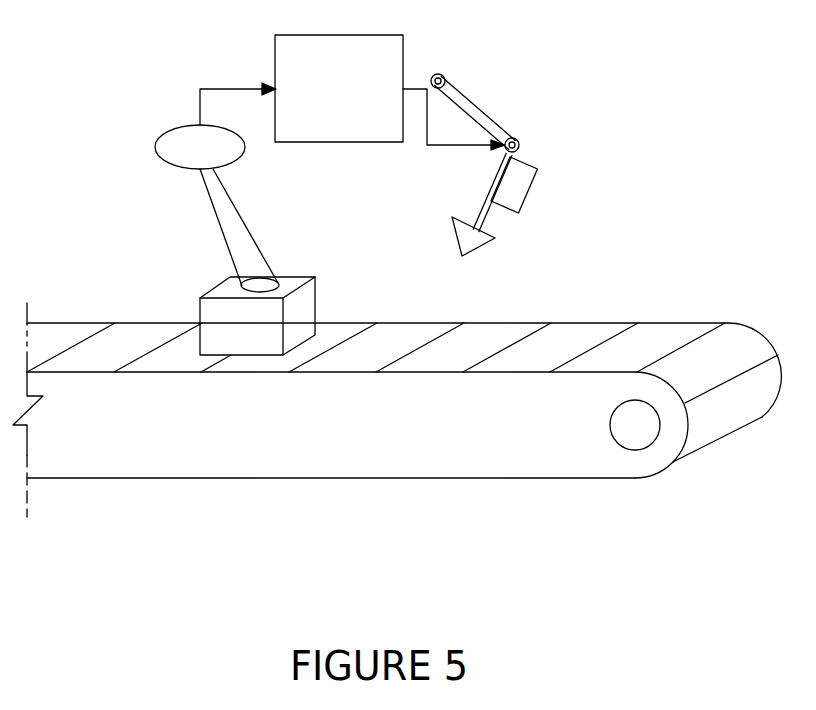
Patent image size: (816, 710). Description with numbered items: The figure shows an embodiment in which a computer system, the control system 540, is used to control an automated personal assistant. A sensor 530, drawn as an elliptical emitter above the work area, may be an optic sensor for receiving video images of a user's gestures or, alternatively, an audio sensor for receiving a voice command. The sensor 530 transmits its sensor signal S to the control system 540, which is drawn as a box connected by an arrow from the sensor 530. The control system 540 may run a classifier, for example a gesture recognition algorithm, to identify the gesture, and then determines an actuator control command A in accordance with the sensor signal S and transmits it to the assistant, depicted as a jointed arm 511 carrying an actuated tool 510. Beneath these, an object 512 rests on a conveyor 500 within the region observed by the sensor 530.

The conveyor 500 is at (335, 480).
The end effector / pick-up tool 510 is at (529, 187).
The robotic arm 511 is at (478, 110).
The package / item 512 is at (316, 290).
The sensor 530 is at (155, 147).
The control system 540 is at (273, 60).